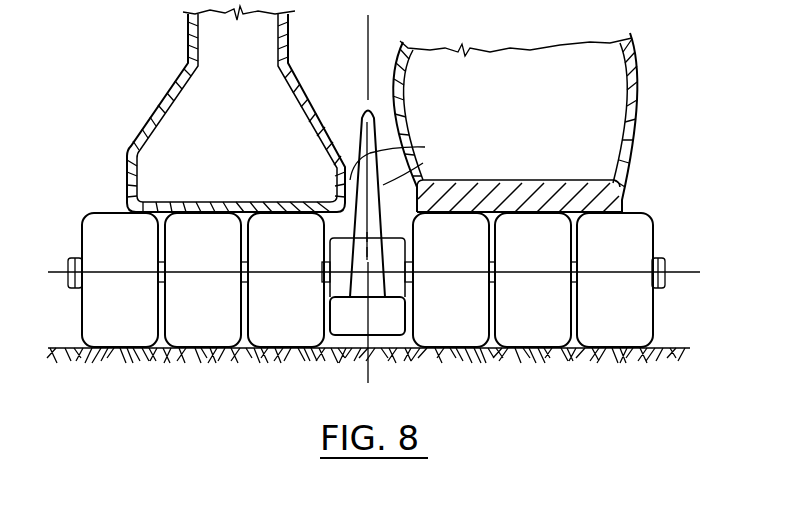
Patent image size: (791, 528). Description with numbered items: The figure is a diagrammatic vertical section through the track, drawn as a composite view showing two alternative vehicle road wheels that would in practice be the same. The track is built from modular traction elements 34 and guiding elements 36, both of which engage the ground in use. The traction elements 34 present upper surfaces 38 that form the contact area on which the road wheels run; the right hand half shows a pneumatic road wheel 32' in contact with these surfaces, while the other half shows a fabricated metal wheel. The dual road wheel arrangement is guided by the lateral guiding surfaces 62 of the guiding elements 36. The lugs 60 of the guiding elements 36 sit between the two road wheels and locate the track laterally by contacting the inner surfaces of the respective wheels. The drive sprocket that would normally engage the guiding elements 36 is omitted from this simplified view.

The pneumatic road wheel 32' is at (551, 122).
The traction elements 34 is at (367, 280).
The guiding elements 36 is at (380, 340).
The upper surfaces 38 is at (530, 213).
The lugs 60 is at (358, 124).
The lateral guiding surfaces 62 is at (404, 160).